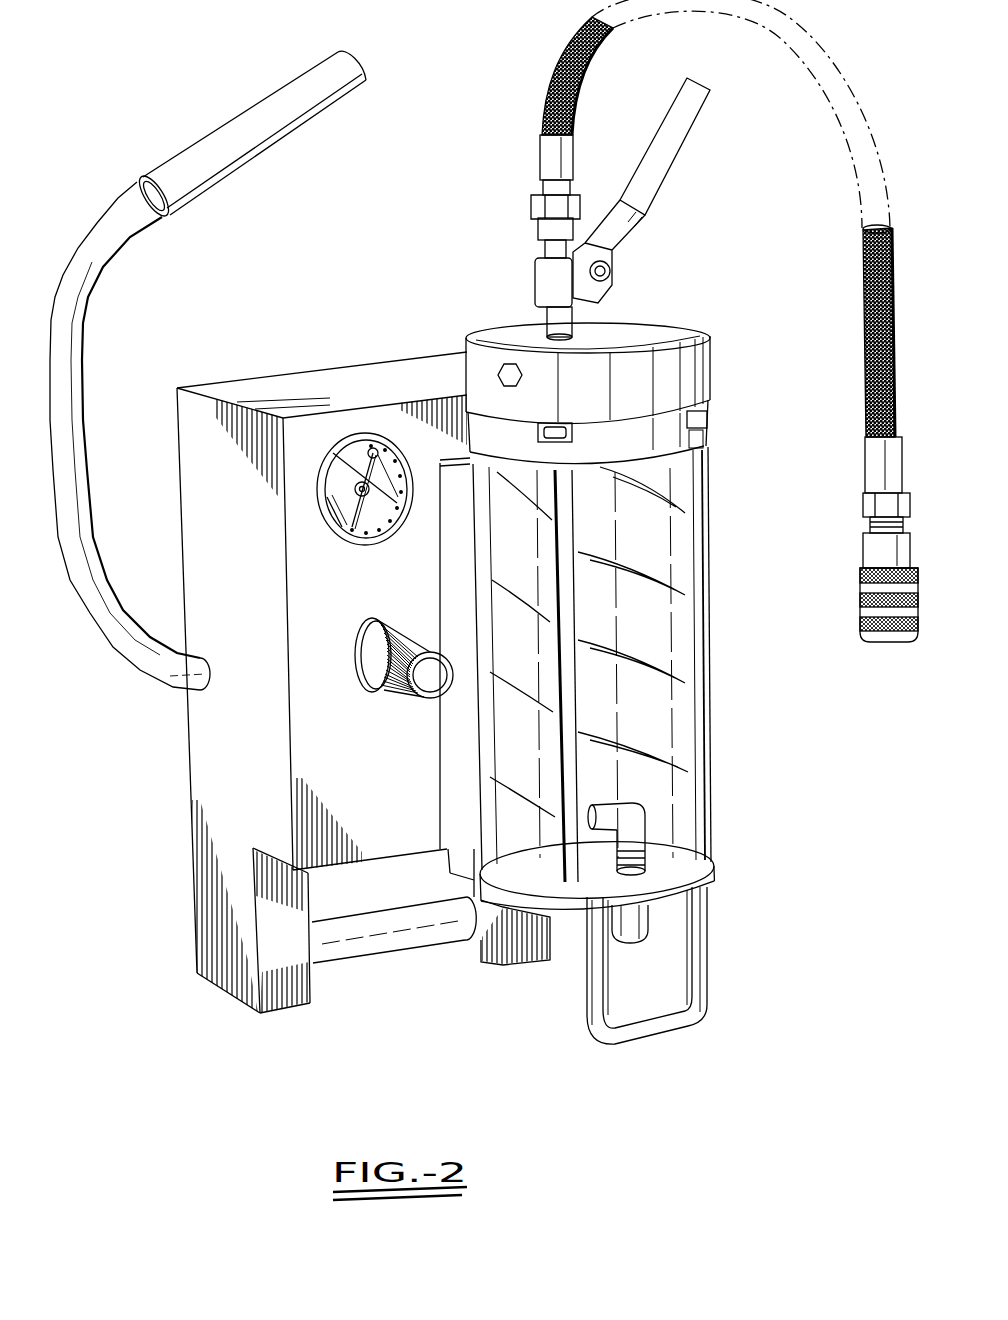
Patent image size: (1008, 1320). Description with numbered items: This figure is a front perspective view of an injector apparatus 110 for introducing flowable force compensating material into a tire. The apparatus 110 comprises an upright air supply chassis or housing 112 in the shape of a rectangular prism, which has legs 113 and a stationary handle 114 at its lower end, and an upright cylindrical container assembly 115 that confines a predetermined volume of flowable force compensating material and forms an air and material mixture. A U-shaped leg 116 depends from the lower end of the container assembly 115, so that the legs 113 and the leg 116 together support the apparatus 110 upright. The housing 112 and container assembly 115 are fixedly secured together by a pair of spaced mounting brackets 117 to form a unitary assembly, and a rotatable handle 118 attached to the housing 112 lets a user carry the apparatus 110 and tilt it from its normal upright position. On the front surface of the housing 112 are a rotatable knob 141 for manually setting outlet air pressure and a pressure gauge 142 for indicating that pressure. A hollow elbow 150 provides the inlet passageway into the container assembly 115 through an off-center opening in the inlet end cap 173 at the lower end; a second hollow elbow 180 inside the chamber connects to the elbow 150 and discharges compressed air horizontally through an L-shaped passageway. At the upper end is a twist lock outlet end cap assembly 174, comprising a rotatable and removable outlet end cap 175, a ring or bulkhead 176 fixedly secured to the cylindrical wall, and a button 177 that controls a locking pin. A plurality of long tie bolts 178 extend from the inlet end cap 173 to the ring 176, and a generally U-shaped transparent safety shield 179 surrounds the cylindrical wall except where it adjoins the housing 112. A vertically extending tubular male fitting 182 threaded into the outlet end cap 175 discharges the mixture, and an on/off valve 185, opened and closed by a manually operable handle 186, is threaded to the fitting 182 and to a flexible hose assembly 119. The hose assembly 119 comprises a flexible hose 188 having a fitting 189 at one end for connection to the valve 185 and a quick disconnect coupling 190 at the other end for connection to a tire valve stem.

The injector apparatus 110 is at (386, 331).
The air supply chassis 112 is at (249, 372).
The legs 113 is at (197, 922).
The stationary handle 114 is at (387, 957).
The cylindrical container assembly 115 is at (720, 517).
The U-shaped leg 116 is at (710, 970).
The mounting brackets 117 is at (515, 814).
The rotatable handle 118 is at (258, 150).
The flexible hose assembly 119 is at (852, 272).
The rotatable knob 141 is at (385, 680).
The pressure gauge 142 is at (322, 500).
The hollow elbow 150 is at (647, 928).
The inlet end cap 173 is at (715, 880).
The twist lock outlet end cap assembly 174 is at (725, 398).
The outlet end cap 175 is at (710, 368).
The ring 176 is at (710, 430).
The button 177 is at (497, 377).
The tie bolts 178 is at (565, 712).
The transparent safety shield 179 is at (545, 748).
The second hollow elbow 180 is at (634, 815).
The tubular male fitting 182 is at (548, 318).
The on/off valve 185 is at (542, 280).
The manually operable handle 186 is at (670, 170).
The flexible hose 188 is at (868, 337).
The fitting 189 is at (542, 147).
The quick disconnect coupling 190 is at (862, 610).